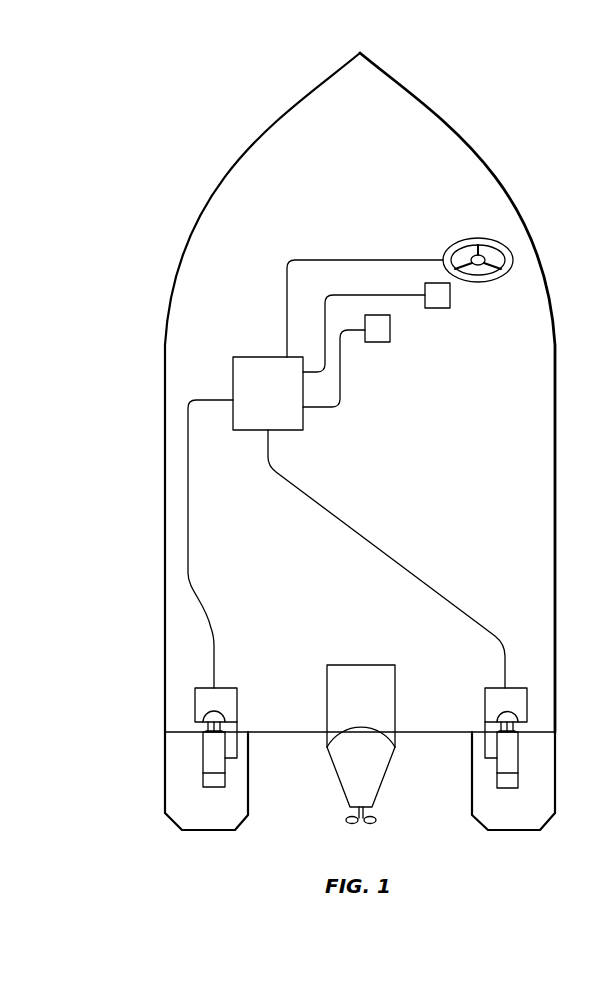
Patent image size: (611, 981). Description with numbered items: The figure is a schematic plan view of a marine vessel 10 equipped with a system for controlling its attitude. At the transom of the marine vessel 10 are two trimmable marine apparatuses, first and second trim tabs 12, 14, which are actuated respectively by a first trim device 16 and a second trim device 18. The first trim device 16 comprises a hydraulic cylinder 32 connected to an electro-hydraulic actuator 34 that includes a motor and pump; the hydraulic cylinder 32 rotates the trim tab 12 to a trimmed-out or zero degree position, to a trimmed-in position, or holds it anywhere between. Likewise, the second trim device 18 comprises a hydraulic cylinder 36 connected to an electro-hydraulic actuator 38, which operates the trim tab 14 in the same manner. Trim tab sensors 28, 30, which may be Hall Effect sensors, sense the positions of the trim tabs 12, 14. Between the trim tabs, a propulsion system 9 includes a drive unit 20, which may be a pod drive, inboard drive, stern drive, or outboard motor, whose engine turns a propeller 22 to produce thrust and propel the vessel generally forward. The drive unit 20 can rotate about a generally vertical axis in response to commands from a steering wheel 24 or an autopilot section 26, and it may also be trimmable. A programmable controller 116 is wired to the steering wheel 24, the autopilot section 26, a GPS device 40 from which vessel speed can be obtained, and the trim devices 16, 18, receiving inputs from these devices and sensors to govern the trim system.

The propulsion system 9 is at (372, 784).
The marine vessel 10 is at (557, 317).
The first trim tab 12 is at (202, 830).
The second trim tab 14 is at (515, 830).
The first trim device 16 is at (209, 734).
The second trim device 18 is at (516, 717).
The drive unit 20 is at (385, 688).
The propeller 22 is at (346, 821).
The steering wheel 24 is at (483, 282).
The autopilot section 26 is at (435, 308).
The trim tab sensor 28 is at (232, 745).
The trim tab sensor 30 is at (490, 745).
The hydraulic cylinder 32 is at (215, 767).
The electro-hydraulic actuator 34 is at (237, 700).
The hydraulic cylinder 36 is at (512, 757).
The electro-hydraulic actuator 38 is at (485, 700).
The GPS device 40 is at (375, 342).
The controller 116 is at (307, 418).